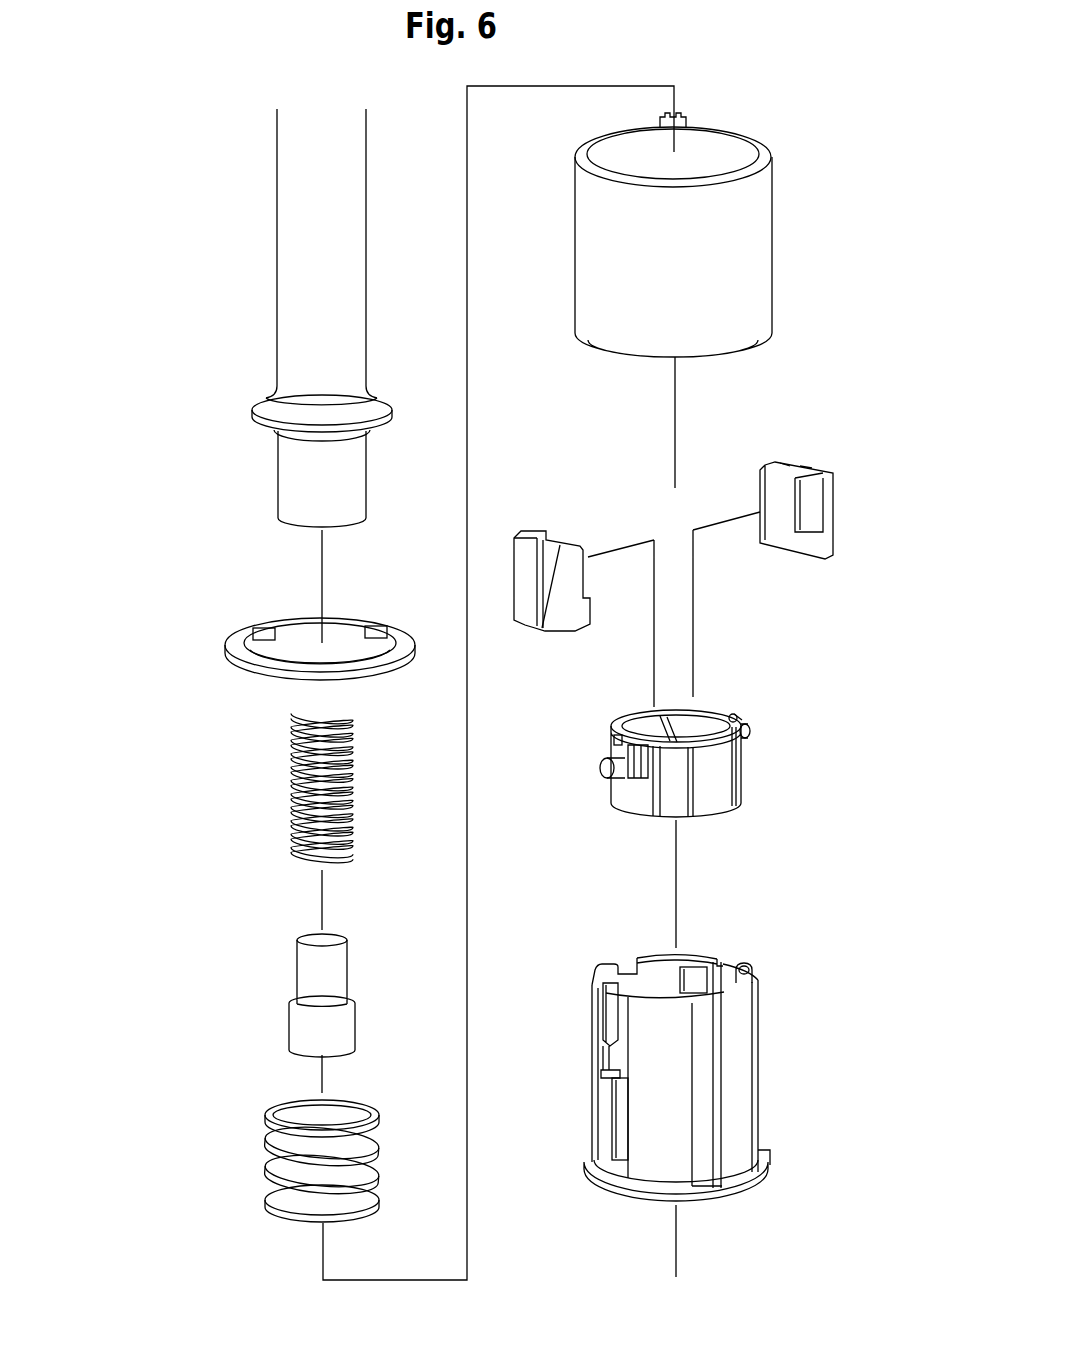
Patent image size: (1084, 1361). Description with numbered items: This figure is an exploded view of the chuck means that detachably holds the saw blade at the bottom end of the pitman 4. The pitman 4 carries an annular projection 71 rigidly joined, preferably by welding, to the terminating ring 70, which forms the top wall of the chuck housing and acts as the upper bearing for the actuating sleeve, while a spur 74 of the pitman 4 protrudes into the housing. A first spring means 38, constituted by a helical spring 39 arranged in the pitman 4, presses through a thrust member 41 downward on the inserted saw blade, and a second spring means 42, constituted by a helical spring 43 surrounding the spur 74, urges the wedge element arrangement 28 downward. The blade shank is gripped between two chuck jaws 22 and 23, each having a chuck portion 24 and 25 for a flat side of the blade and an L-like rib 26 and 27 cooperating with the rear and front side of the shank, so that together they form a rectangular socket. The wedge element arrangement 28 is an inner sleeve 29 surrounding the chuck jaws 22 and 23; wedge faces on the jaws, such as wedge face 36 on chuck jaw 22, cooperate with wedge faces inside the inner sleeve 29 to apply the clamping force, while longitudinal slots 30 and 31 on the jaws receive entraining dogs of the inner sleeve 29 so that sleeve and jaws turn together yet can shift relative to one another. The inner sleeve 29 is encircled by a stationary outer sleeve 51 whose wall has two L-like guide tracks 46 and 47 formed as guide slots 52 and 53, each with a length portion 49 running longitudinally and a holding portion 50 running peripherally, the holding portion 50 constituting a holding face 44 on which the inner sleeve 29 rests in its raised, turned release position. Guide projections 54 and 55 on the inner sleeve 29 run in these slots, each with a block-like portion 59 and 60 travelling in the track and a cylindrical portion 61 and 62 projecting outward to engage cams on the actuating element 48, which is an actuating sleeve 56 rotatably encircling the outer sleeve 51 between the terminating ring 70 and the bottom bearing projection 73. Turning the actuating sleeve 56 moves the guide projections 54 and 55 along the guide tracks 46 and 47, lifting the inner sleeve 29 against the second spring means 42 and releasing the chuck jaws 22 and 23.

The pitman 4 is at (277, 248).
The annular projection 71 is at (263, 400).
The spur 74 is at (275, 478).
The terminating ring 70 is at (213, 661).
The first spring means 38 is at (257, 788).
The helical spring 39 is at (282, 800).
The thrust member 41 is at (268, 1012).
The second spring means 42 is at (264, 1175).
The helical spring 43 is at (253, 1186).
The actuating element 48 is at (718, 235).
The actuating sleeve 56 is at (779, 260).
The chuck jaw 22 is at (537, 590).
The L-like rib 26 is at (548, 531).
The chuck portion 24 is at (565, 547).
The guide groove 30 is at (540, 568).
The wedge face 36 is at (546, 590).
The chuck jaw 23 is at (808, 525).
The chuck portion 25 is at (790, 467).
The slot 31 is at (805, 466).
The L-like rib 27 is at (806, 510).
The wedge element arrangement 28 is at (681, 760).
The inner sleeve 29 is at (681, 760).
The guide projection 54 is at (615, 800).
The block-like portion 59 is at (612, 748).
The cylindrical portion 61 is at (600, 780).
The cylindrical portion 62 is at (756, 727).
The block-like portion 60 is at (735, 713).
The guide projection 55 is at (742, 714).
The outer sleeve 51 is at (671, 1088).
The bottom bearing projection 73 is at (600, 1193).
The holding portion 50 is at (603, 1060).
The holding face 44 is at (616, 1075).
The length portion 49 is at (622, 1128).
The guide track 46 is at (562, 1128).
The guide slot 52 is at (625, 1098).
The guide track 47 is at (781, 951).
The guide slot 53 is at (738, 975).